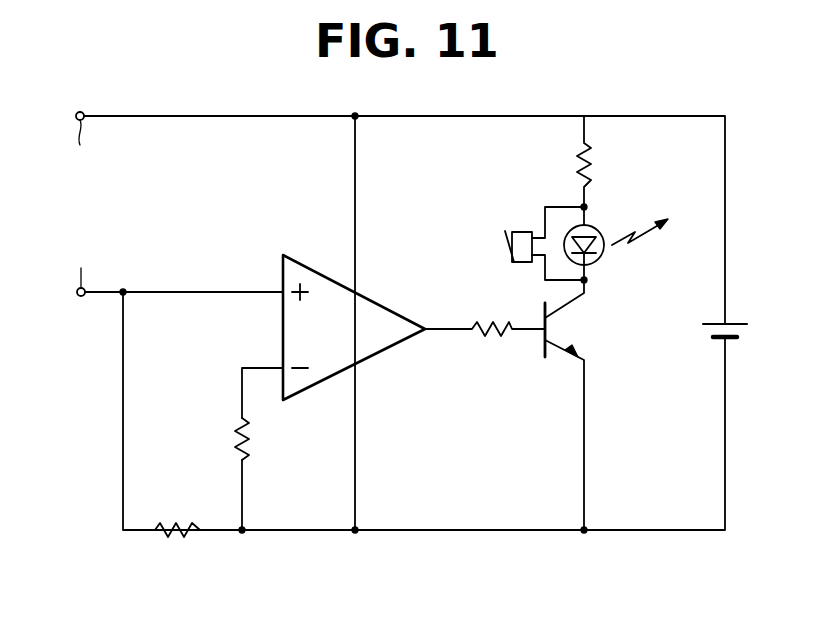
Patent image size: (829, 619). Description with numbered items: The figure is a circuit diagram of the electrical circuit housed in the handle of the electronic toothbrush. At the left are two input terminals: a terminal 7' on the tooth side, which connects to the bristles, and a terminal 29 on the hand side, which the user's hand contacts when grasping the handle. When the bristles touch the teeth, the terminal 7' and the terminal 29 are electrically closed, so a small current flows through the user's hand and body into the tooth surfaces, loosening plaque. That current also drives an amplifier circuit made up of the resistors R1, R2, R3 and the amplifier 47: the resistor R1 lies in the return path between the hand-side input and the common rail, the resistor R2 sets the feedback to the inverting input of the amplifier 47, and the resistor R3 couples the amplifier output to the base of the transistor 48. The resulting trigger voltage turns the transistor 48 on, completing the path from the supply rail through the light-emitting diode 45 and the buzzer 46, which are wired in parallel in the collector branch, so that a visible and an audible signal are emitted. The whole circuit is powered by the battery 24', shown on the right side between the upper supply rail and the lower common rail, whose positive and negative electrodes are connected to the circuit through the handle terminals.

The terminal on the tooth side 7' is at (95, 115).
The terminal on the hand side 29 is at (81, 296).
The amplifier 47 is at (383, 356).
The transistor 48 is at (560, 345).
The light-emitting diode 45 is at (600, 232).
The buzzer 46 is at (521, 231).
The battery 24' is at (692, 337).
The resistor R1 is at (175, 540).
The resistor R2 is at (250, 440).
The resistor R3 is at (496, 322).